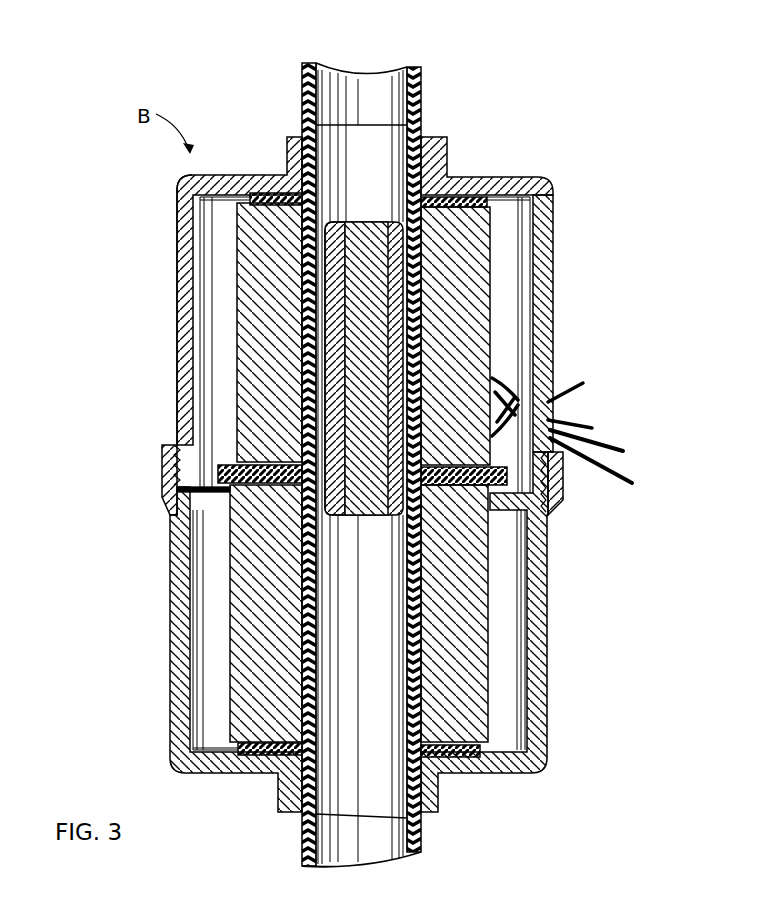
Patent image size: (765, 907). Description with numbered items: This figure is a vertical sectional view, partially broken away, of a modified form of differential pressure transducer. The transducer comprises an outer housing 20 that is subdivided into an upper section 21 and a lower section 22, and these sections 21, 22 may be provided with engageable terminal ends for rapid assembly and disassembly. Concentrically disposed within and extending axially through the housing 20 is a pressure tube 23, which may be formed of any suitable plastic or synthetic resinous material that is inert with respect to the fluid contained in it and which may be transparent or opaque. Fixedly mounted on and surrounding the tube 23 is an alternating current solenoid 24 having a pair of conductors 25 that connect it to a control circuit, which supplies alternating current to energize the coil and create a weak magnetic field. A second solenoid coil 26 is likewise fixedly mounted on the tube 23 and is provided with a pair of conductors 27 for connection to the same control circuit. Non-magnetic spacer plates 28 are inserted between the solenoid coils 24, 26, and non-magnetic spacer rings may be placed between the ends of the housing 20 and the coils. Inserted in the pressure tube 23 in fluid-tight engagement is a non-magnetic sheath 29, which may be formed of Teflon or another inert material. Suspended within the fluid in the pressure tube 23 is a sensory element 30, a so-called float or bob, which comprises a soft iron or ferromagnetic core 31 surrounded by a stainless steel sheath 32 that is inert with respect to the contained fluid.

The outer housing 20 is at (174, 261).
The upper section 21 is at (553, 240).
The lower section 22 is at (548, 714).
The pressure tube 23 is at (373, 66).
The alternating current solenoid 24 is at (491, 340).
The conductors 25 is at (633, 483).
The second solenoid coil 26 is at (489, 647).
The conductors 27 is at (593, 428).
The non-magnetic spacer plates 28 is at (465, 195).
The non-magnetic sheath 29 is at (431, 112).
The sensory element 30 is at (262, 368).
The ferromagnetic core 31 is at (353, 387).
The stainless steel sheath 32 is at (332, 333).